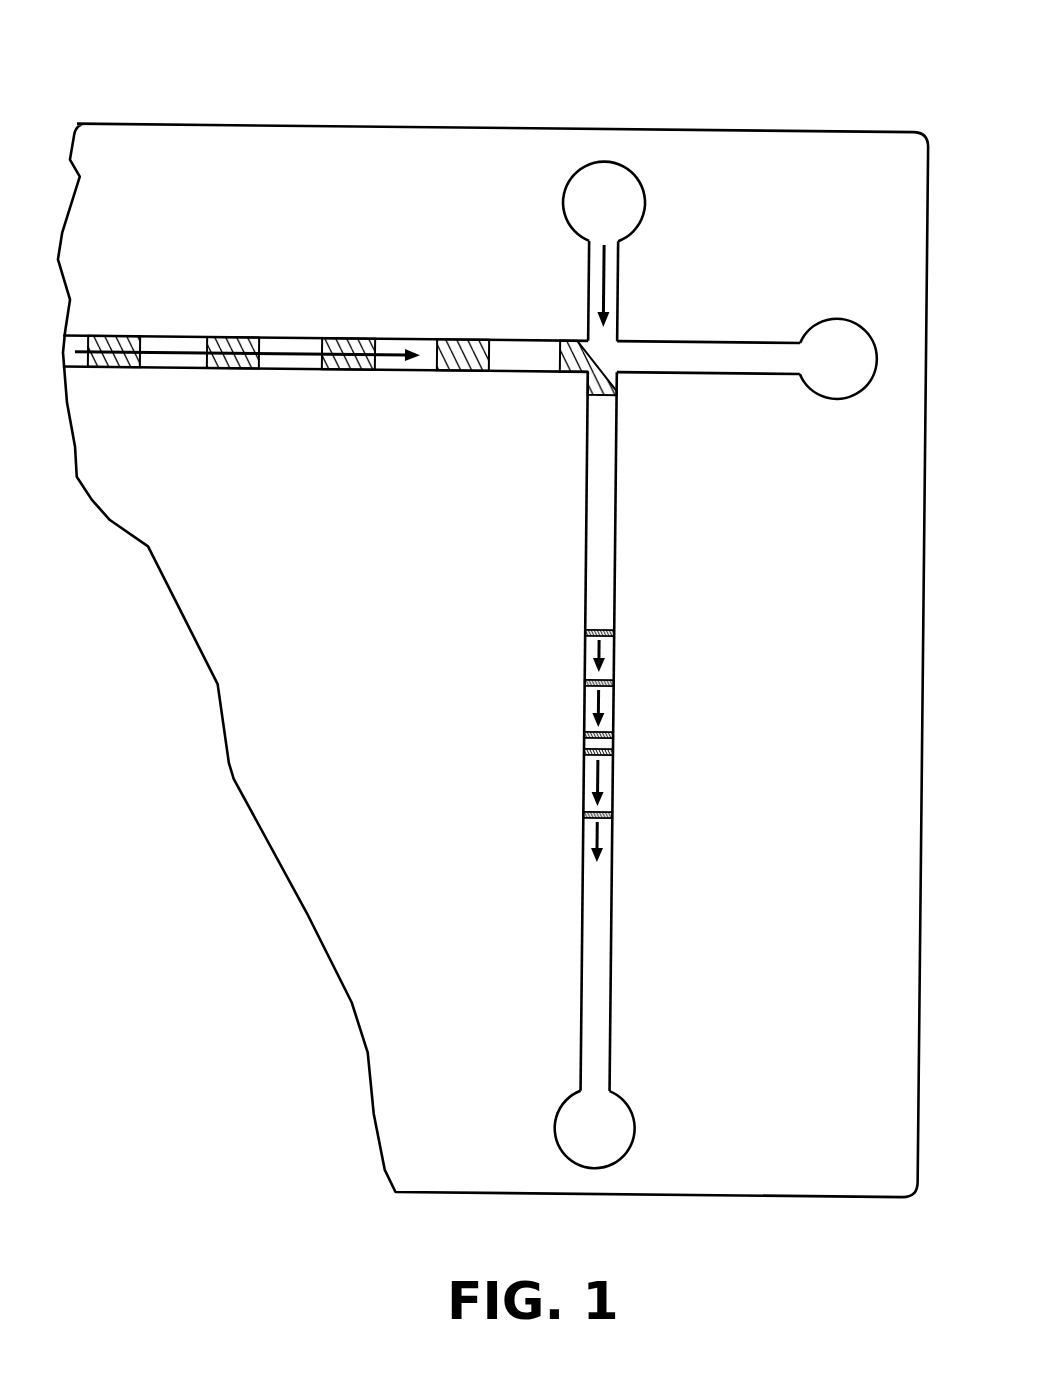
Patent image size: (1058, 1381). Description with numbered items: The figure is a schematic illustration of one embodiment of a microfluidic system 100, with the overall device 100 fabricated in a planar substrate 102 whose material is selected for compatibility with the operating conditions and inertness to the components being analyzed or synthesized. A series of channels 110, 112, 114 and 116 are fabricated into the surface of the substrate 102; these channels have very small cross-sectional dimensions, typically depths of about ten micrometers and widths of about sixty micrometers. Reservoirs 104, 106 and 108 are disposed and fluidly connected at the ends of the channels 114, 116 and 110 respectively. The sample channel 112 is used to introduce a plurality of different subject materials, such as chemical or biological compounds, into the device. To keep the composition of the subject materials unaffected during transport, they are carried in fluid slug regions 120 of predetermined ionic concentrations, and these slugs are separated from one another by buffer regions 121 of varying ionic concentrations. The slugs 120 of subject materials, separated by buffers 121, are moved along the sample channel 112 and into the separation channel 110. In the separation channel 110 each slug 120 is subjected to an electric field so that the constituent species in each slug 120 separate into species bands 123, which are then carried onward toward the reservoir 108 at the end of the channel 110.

The microfluidic system 100 is at (502, 73).
The planar substrate 102 is at (876, 1155).
The reservoir 104 is at (635, 205).
The reservoir 106 is at (850, 328).
The reservoir 108 is at (586, 1128).
The separation channel 110 is at (613, 428).
The sample channel 112 is at (419, 341).
The channel 114 is at (614, 277).
The channel 116 is at (707, 350).
The fluid slug regions 120 is at (132, 372).
The buffer regions 121 is at (184, 312).
The species bands 123 is at (617, 815).